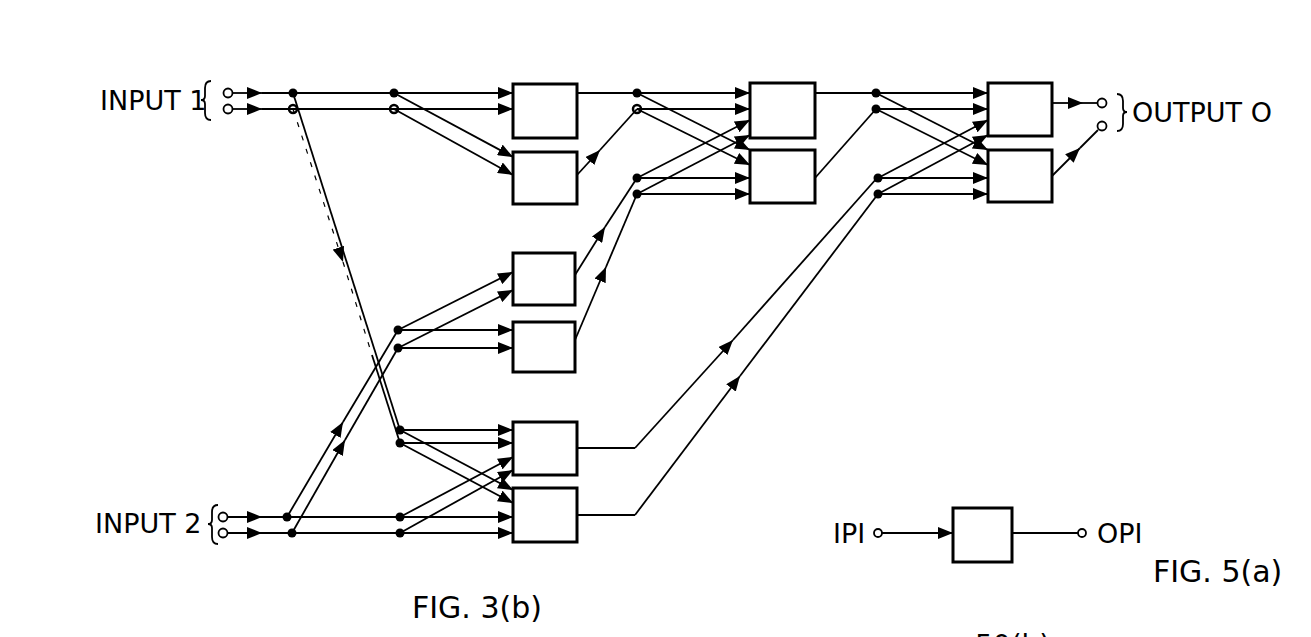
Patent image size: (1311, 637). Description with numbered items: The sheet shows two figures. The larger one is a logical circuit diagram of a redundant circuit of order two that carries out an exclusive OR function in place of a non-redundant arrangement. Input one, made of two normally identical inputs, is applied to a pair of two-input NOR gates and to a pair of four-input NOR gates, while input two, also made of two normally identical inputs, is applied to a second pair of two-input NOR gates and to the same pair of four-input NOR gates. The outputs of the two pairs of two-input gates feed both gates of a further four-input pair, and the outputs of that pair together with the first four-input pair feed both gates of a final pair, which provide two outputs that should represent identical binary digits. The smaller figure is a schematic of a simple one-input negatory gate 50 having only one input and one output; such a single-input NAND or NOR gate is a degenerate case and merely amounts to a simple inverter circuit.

The negatory gate 50 is at (955, 562).